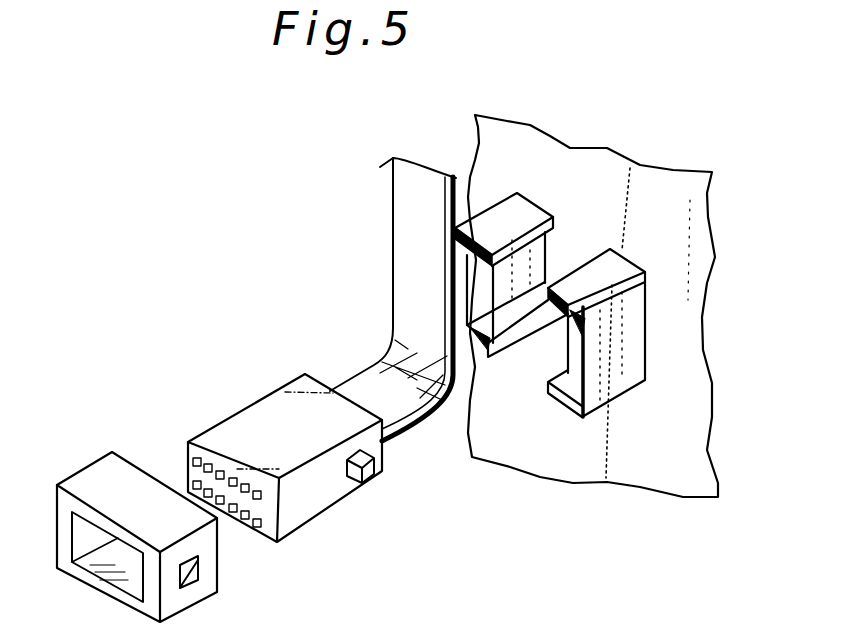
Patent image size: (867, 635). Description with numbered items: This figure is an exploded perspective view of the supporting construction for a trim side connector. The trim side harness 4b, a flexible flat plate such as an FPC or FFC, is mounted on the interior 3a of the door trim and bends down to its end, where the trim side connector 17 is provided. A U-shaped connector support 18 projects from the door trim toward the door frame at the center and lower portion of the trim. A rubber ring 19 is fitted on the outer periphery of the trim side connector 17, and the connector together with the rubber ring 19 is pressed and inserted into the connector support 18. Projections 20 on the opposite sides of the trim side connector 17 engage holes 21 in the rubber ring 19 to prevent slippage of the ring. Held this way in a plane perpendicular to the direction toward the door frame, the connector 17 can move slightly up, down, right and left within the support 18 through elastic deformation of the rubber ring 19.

The interior of the door trim 3a is at (615, 182).
The trim side harness 4b is at (403, 235).
The trim side connector 17 is at (262, 413).
The connector support 18 is at (500, 208).
The rubber ring 19 is at (120, 482).
The projection 20 is at (362, 480).
The hole 21 is at (188, 582).